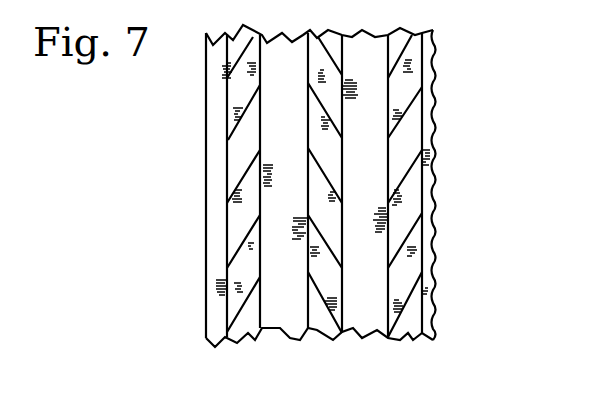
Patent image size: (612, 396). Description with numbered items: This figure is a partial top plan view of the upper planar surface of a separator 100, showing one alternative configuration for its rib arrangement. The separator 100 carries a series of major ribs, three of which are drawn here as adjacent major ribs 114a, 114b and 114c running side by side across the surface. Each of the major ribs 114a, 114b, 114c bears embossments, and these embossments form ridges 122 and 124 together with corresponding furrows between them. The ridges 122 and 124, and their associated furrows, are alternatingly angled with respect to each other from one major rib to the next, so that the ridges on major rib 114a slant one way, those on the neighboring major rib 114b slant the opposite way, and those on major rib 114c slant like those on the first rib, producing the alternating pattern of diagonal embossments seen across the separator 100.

The separator 100 is at (488, 128).
The major rib 114a is at (230, 117).
The major rib 114b is at (308, 164).
The major rib 114c is at (390, 207).
The ridges 122 is at (405, 56).
The ridges 124 is at (308, 172).